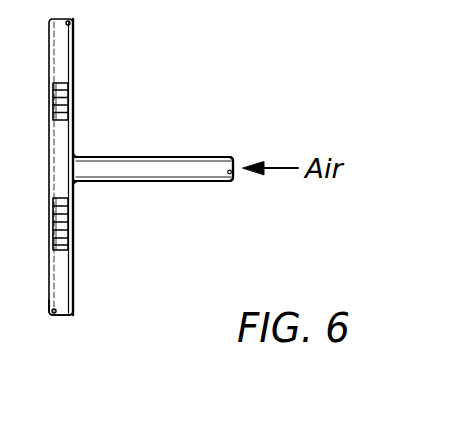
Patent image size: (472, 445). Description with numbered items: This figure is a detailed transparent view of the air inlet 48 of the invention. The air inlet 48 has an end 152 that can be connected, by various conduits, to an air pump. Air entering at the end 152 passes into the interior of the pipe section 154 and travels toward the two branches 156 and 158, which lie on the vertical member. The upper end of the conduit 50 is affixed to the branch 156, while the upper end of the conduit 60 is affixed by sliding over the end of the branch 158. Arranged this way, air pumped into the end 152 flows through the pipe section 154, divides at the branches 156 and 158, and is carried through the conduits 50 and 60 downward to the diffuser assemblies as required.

The conduit 50 is at (73, 42).
The branch 156 is at (73, 117).
The branch 158 is at (73, 203).
The conduit 60 is at (73, 283).
The air inlet 48 is at (147, 156).
The end 152 is at (232, 157).
The pipe section 154 is at (190, 180).